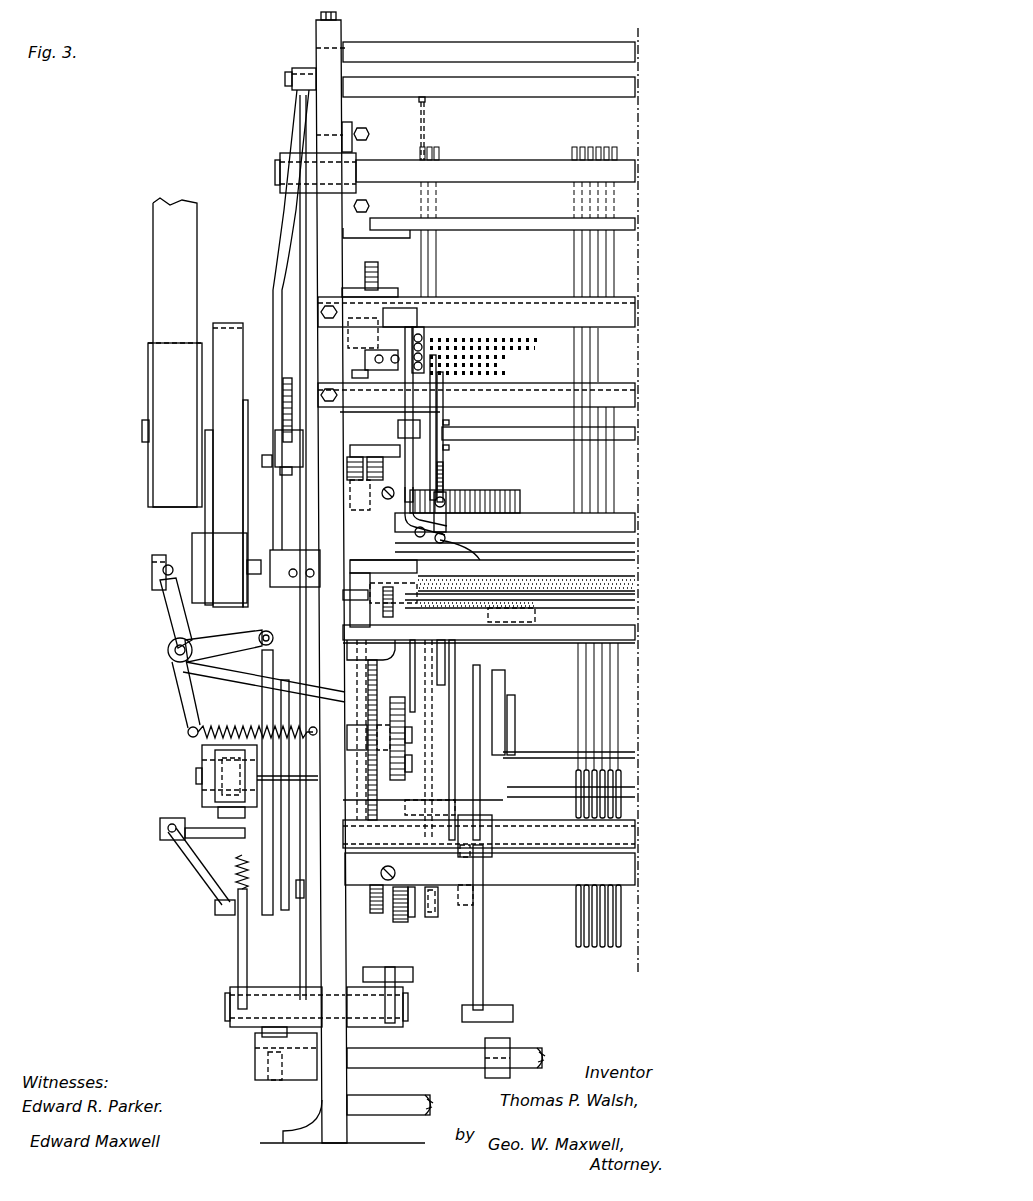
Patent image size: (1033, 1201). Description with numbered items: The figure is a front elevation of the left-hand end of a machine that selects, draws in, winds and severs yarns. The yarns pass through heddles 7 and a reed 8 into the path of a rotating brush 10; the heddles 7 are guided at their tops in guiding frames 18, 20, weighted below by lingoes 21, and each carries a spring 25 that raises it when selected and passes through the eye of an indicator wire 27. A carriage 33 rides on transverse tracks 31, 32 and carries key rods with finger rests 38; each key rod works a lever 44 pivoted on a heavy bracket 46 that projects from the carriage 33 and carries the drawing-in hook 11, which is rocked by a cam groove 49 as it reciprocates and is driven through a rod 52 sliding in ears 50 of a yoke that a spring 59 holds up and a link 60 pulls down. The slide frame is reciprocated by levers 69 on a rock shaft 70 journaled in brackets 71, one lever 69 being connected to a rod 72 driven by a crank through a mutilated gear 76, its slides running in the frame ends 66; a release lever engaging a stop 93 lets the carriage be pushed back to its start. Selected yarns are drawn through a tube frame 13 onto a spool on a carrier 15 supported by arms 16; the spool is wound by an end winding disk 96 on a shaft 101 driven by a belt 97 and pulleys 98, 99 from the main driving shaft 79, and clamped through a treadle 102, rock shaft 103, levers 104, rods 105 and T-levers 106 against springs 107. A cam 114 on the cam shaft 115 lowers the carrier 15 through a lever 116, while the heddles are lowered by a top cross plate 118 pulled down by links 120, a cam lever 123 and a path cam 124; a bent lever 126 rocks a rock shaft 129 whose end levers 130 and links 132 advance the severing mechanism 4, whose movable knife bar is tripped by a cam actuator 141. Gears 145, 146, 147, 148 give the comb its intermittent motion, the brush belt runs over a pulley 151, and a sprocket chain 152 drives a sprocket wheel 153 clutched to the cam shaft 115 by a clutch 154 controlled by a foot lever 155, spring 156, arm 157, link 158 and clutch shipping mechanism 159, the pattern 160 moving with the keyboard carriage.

The severing mechanism 4 is at (371, 650).
The heddles 7 is at (600, 706).
The reed 8 is at (498, 502).
The rotating straightener or brush 10 is at (636, 582).
The hook 11 is at (448, 530).
The tube frame 13 is at (628, 524).
The carrier 15 is at (636, 600).
The arms 16 is at (412, 680).
The guiding frame 18 is at (630, 432).
The guiding frame 20 is at (630, 224).
The weights or lingoes 21 is at (632, 917).
The spring 25 is at (572, 190).
The indicator wire 27 is at (506, 350).
The transverse track 31 is at (628, 314).
The transverse track 32 is at (628, 392).
The carriage 33 is at (598, 333).
The enlarged head or finger rest 38 is at (425, 340).
The lever 44 is at (443, 422).
The arm or heavy bracket 46 is at (422, 399).
The cam groove 49 is at (400, 470).
The ears 50 is at (445, 545).
The rod 52 is at (468, 549).
The spring 59 is at (450, 480).
The link 60 is at (440, 415).
The frame ends 66 is at (332, 928).
The levers 69 is at (302, 268).
The rock shaft 70 is at (630, 172).
The brackets 71 is at (368, 134).
The rod 72 is at (292, 448).
The mutilated gear 76 is at (378, 268).
The main driving shaft 79 is at (148, 432).
The stop 93 is at (350, 372).
The end winding disk 96 is at (392, 578).
The belt 97 is at (233, 503).
The pulley 98 is at (226, 568).
The pulley 99 is at (213, 326).
The shaft 101 is at (152, 572).
The treadle 102 is at (512, 1036).
The rock shaft 103 is at (430, 1058).
The levers 104 is at (290, 1058).
The rods 105 is at (283, 968).
The T-levers 106 is at (183, 712).
The springs 107 is at (232, 726).
The cam 114 is at (502, 808).
The cam shaft 115 is at (632, 770).
The lever 116 is at (513, 697).
The top cross plate 118 is at (622, 82).
The links 120 is at (295, 230).
The cam lever 123 is at (460, 652).
The path cam 124 is at (434, 917).
The bent lever 126 is at (500, 720).
The rock shaft 129 is at (632, 834).
The end levers 130 is at (312, 778).
The links 132 is at (215, 672).
The cam actuator 141 is at (364, 730).
The gear 145 is at (406, 702).
The gear 146 is at (410, 918).
The gear 147 is at (380, 914).
The gear 148 is at (370, 766).
The pulley 151 is at (282, 380).
The sprocket chain 152 is at (298, 712).
The sprocket wheel 153 is at (470, 893).
The clutch 154 is at (240, 762).
The foot lever 155 is at (403, 972).
The spring 156 is at (238, 878).
The arm 157 is at (238, 950).
The link 158 is at (195, 865).
The clutch shipping mechanism 159 is at (224, 812).
The pattern 160 is at (418, 316).